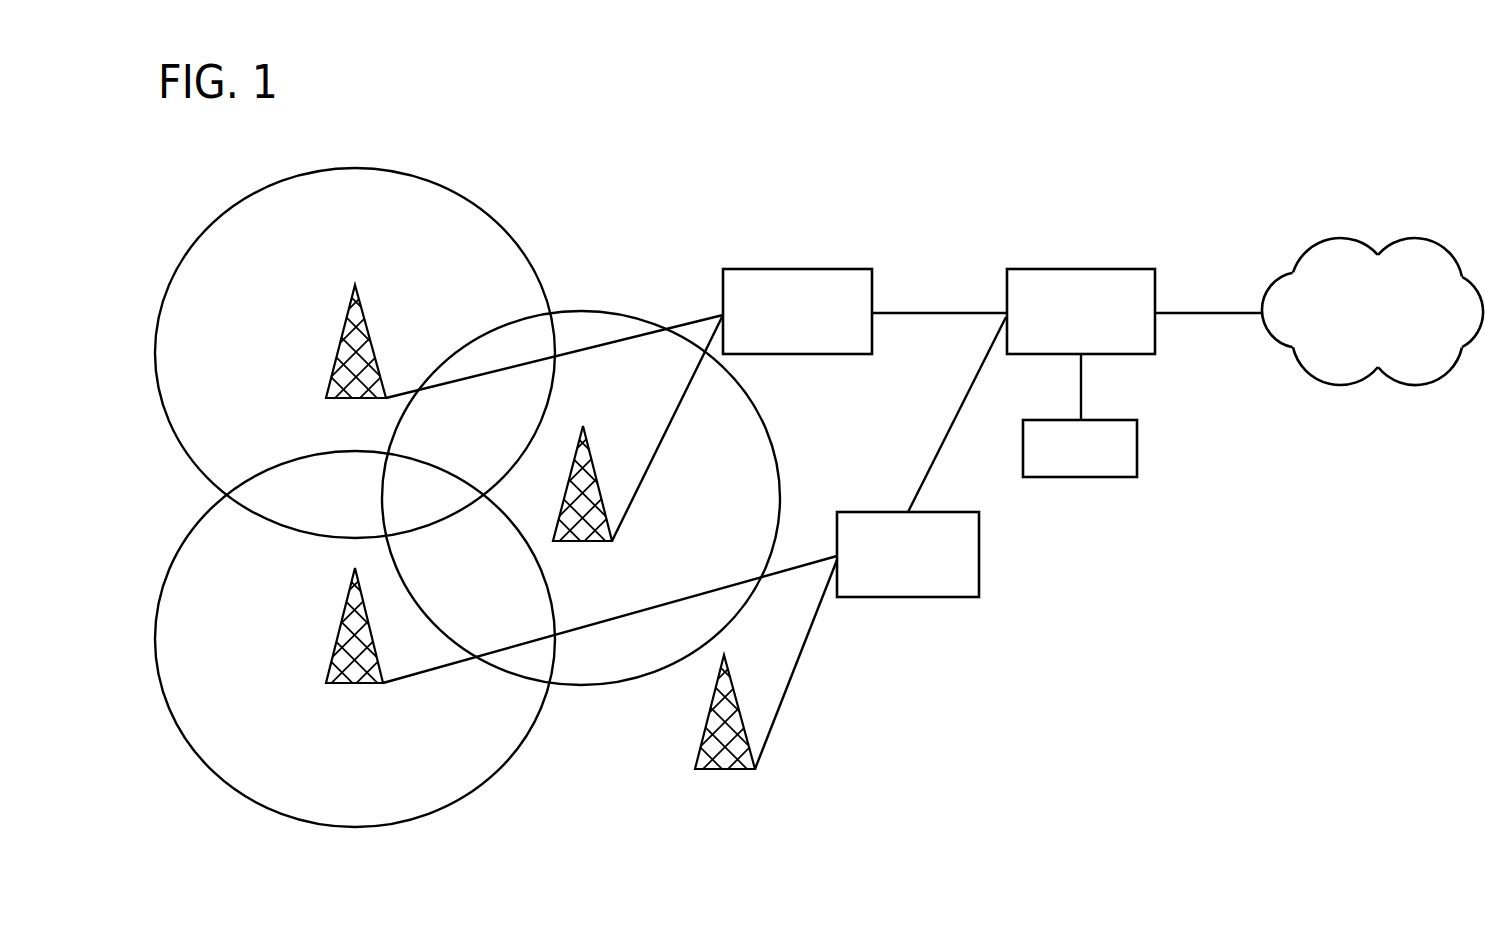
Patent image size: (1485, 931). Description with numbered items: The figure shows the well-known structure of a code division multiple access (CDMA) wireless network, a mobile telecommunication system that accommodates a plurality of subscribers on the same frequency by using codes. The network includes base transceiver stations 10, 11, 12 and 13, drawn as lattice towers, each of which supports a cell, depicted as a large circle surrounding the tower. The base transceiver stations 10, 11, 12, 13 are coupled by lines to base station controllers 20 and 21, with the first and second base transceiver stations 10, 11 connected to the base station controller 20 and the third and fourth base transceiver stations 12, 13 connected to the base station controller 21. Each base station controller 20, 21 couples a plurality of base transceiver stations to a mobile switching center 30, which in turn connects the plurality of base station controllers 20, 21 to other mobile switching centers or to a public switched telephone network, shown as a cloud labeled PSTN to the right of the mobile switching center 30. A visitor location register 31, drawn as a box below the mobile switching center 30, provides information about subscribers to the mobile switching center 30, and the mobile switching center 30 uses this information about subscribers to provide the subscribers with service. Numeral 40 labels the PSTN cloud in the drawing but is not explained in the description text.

The base transceiver station 10 is at (359, 292).
The base transceiver station 11 is at (587, 433).
The base transceiver station 12 is at (366, 661).
The base transceiver station 13 is at (727, 656).
The base station controller 20 is at (795, 269).
The base station controller 21 is at (937, 512).
The mobile switching center 30 is at (1080, 269).
The visitor location register 31 is at (1138, 448).
The public switched telephone network (PSTN) 40 is at (1405, 238).